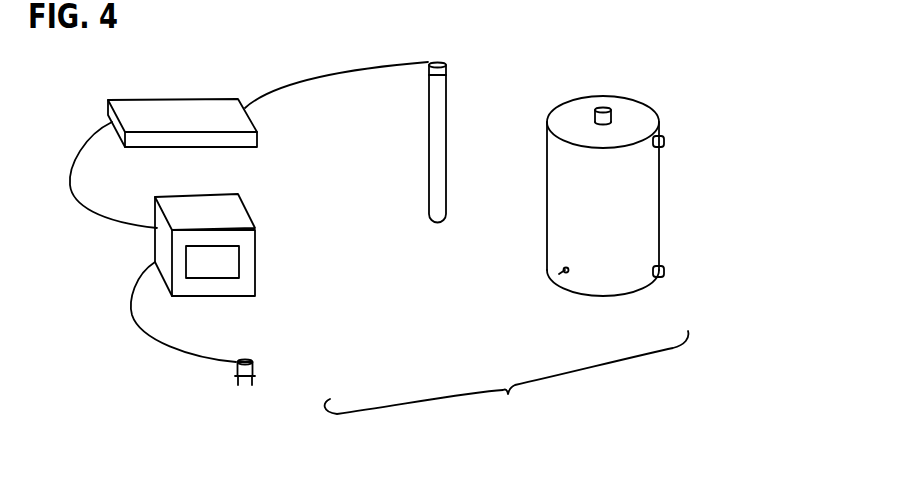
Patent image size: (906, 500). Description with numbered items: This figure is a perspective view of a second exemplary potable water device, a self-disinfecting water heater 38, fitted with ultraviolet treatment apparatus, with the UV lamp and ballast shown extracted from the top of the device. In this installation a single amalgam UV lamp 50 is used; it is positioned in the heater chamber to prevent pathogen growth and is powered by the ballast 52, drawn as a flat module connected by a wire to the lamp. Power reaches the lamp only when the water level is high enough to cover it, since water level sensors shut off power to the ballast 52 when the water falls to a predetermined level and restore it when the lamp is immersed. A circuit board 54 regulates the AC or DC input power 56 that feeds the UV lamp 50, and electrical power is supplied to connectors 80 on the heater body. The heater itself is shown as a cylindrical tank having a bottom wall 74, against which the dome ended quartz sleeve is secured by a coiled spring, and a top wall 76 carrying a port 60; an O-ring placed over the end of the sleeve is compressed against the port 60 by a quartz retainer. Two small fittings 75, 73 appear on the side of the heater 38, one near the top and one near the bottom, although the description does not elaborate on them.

The self-disinfecting water heater 38 is at (507, 383).
The UV lamp 50 is at (452, 120).
The ballast 52 is at (135, 97).
The circuit board 54 is at (140, 248).
The AC or DC input power 56 is at (218, 372).
The port 60 is at (610, 110).
The lower knob 73 is at (668, 270).
The bottom wall 74 is at (593, 296).
The upper knob 75 is at (667, 138).
The top wall 76 is at (637, 123).
The connectors 80 is at (559, 272).